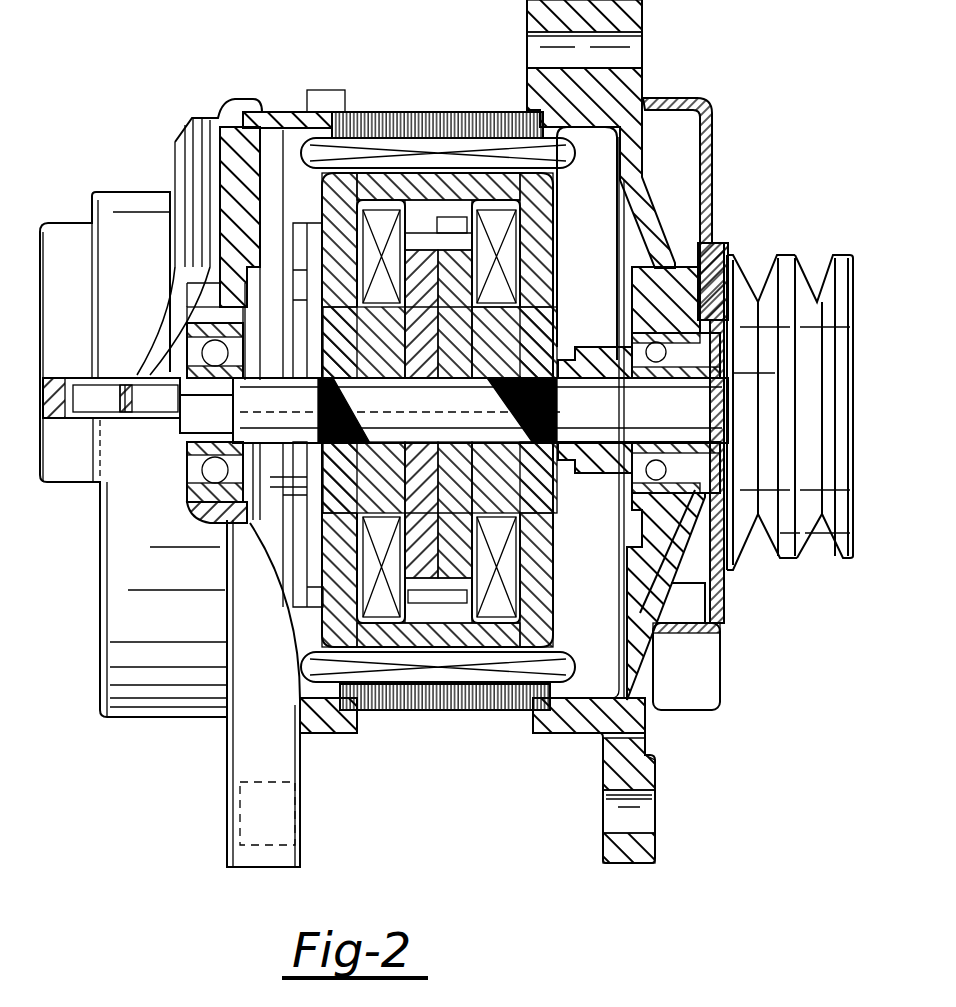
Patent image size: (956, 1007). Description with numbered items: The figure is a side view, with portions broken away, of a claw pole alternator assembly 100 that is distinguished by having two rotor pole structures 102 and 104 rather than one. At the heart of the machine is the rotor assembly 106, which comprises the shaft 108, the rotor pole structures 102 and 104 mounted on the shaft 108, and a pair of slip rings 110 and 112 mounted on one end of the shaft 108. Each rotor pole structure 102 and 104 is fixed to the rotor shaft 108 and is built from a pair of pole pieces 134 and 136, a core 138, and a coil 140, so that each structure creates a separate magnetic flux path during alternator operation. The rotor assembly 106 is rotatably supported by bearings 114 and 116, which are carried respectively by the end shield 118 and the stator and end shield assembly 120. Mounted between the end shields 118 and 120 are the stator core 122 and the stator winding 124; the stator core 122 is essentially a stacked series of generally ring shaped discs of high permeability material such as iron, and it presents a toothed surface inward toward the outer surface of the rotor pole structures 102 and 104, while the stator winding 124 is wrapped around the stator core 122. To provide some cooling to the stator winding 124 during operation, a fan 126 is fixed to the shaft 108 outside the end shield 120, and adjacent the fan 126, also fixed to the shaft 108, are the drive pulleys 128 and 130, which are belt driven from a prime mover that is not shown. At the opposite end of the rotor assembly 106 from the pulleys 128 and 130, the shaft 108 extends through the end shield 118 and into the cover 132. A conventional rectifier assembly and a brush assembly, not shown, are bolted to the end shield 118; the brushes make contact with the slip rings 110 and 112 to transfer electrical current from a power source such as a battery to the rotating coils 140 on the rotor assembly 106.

The claw pole alternator assembly 100 is at (187, 66).
The rotor pole structure 102 is at (563, 182).
The rotor pole structure 104 is at (310, 200).
The rotor assembly 106 is at (571, 573).
The shaft 108 is at (454, 410).
The slip ring 110 is at (80, 372).
The slip ring 112 is at (142, 378).
The bearing 114 is at (187, 462).
The bearing 116 is at (668, 300).
The end shield 118 is at (290, 765).
The stator and end shield assembly 120 is at (637, 740).
The stator core 122 is at (398, 75).
The stator winding 124 is at (455, 140).
The fan 126 is at (712, 135).
The drive pulley 128 is at (777, 553).
The drive pulley 130 is at (834, 550).
The cover 132 is at (160, 720).
The pole piece 134 is at (540, 195).
The pole piece 136 is at (456, 295).
The core 138 is at (512, 335).
The coil 140 is at (502, 252).